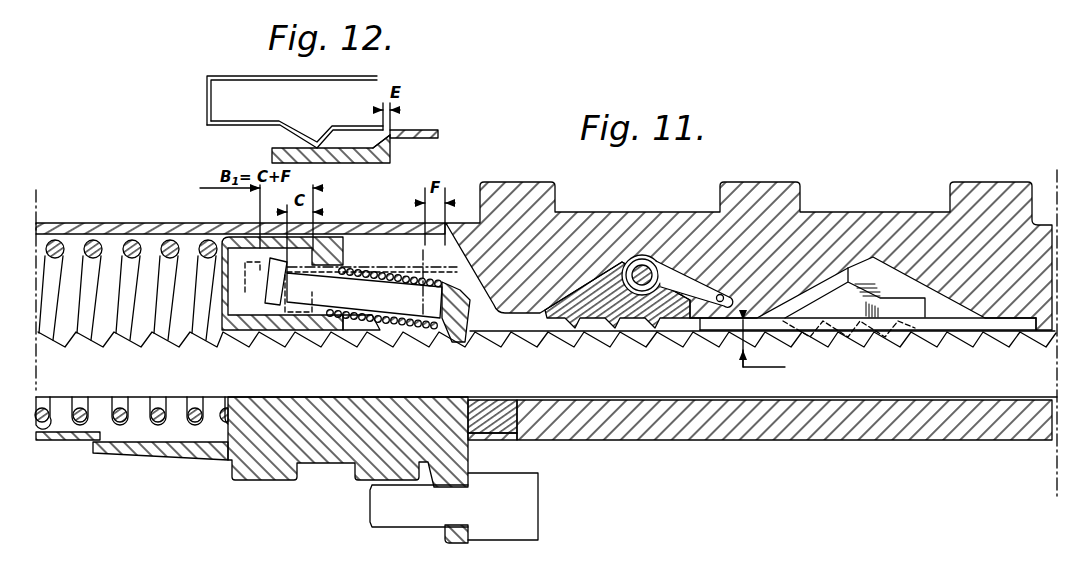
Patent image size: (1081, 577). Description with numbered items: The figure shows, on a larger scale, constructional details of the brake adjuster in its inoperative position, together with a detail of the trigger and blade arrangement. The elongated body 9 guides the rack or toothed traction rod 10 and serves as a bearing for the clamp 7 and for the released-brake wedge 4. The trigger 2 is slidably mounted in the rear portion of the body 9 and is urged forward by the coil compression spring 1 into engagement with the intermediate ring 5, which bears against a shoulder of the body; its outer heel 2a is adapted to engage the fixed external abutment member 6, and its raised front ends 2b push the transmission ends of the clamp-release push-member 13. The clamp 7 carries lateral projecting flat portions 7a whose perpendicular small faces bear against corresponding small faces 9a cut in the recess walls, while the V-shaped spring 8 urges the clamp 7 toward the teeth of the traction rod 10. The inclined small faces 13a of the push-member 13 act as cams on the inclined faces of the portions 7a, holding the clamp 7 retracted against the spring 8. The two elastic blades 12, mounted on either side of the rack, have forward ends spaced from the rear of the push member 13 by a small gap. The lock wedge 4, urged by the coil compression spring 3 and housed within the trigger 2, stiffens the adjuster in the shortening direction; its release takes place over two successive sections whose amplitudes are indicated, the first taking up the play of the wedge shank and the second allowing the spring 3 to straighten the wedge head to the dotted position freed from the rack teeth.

In FIG. 11, the coil compression spring 1 is at (92, 245).
In FIG. 12, the trigger 2 is at (328, 160).
In FIG. 11, the trigger 2 is at (343, 250).
In FIG. 11, the outer heel 2a is at (440, 473).
In FIG. 12, the front ends of trigger 2b is at (393, 149).
In FIG. 11, the coil compression spring 3 is at (406, 272).
In FIG. 11, the lock pawl or wedge 4 is at (449, 352).
In FIG. 11, the intermediate ring 5 is at (499, 399).
In FIG. 11, the fixed external abutment member 6 is at (502, 530).
In FIG. 11, the clamp 7 is at (600, 318).
In FIG. 11, the projecting flat portions 7a is at (863, 280).
In FIG. 11, the V-shaped spring 8 is at (678, 277).
In FIG. 11, the body 9 is at (785, 433).
In FIG. 11, the small faces of recess 9a is at (700, 320).
In FIG. 11, the rack or toothed traction rod 10 is at (878, 379).
In FIG. 12, the elastic blades 12 is at (268, 122).
In FIG. 11, the elastic blades 12 is at (380, 325).
In FIG. 12, the clamp-release push-member 13 is at (422, 129).
In FIG. 11, the clamp-release push-member 13 is at (712, 331).
In FIG. 11, the inclined small faces 13a is at (862, 303).